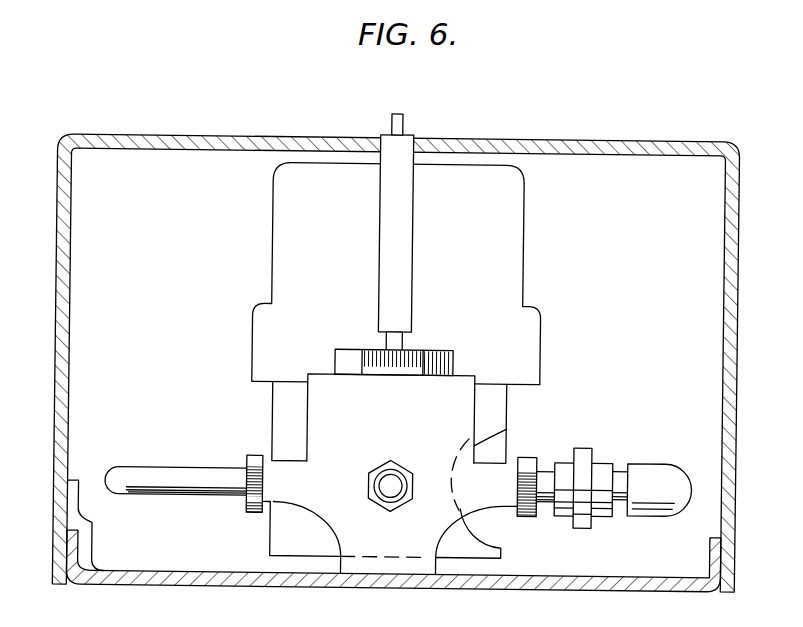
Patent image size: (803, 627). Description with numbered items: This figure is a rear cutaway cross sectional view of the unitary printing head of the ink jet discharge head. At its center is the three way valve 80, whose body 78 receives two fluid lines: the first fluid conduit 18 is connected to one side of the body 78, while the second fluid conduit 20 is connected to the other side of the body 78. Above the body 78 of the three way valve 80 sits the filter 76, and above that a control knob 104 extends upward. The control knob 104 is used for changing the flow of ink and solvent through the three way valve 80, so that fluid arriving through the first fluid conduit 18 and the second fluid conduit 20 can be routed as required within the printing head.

The first fluid conduit 18 is at (671, 467).
The second fluid conduit 20 is at (194, 471).
The filter 76 is at (522, 256).
The body 78 is at (425, 417).
The three way valve 80 is at (399, 501).
The control knob 104 is at (401, 121).